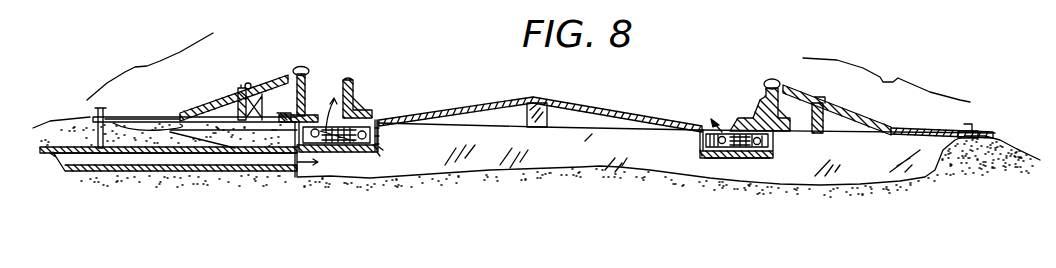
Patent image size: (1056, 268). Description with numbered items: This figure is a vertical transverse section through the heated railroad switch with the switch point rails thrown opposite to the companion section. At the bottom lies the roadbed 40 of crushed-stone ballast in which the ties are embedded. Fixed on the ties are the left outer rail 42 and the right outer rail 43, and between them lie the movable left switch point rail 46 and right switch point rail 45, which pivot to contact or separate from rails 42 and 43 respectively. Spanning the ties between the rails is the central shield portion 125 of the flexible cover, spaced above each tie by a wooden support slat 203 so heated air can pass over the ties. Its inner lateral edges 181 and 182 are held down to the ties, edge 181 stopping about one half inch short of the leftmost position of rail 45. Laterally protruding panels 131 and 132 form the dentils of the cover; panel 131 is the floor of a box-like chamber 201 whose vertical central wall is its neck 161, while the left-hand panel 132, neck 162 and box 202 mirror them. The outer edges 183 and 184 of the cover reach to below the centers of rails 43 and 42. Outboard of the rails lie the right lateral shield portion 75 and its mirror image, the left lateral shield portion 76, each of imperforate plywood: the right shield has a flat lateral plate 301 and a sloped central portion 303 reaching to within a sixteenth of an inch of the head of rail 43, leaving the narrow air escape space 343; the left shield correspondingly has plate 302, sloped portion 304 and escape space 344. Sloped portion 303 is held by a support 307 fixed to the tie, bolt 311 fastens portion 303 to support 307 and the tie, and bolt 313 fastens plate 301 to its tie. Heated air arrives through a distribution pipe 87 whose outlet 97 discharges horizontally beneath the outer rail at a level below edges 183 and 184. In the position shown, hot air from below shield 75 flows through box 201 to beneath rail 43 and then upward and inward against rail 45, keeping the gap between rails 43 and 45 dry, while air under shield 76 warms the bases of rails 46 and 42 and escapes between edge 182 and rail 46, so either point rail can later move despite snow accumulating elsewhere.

The roadbed 40 is at (872, 180).
The left outer fixed rail 42 is at (773, 79).
The right outer fixed rail 43 is at (299, 66).
The right switch point rail 45 is at (352, 80).
The left switch point rail 46 is at (760, 107).
The right lateral shield portion 75 is at (150, 66).
The left lateral shield portion 76 is at (886, 80).
The distribution pipe 87 is at (267, 180).
The discharge outlet 97 is at (296, 163).
The central shield portion 125 is at (498, 98).
The panel 131 is at (360, 150).
The panel 132 is at (757, 157).
The neck 161 is at (378, 148).
The coupling 162 is at (700, 148).
The inner right lateral edge 181 is at (380, 118).
The inner left edge 182 is at (705, 128).
The outer right edge 183 is at (296, 133).
The outer left edge 184 is at (773, 150).
The chamber 201 is at (388, 140).
The box 202 is at (688, 148).
The support slat 203 is at (548, 115).
The imperforate lateral portion 301 is at (148, 117).
The imperforate lateral portion 302 is at (947, 128).
The sloped central portion 303 is at (240, 97).
The support post 304 is at (877, 110).
The support 307 is at (278, 109).
The bolt 311 is at (205, 103).
The bolt 313 is at (90, 138).
The right lateral air escape space 343 is at (290, 66).
The left lateral air escape space 344 is at (790, 84).